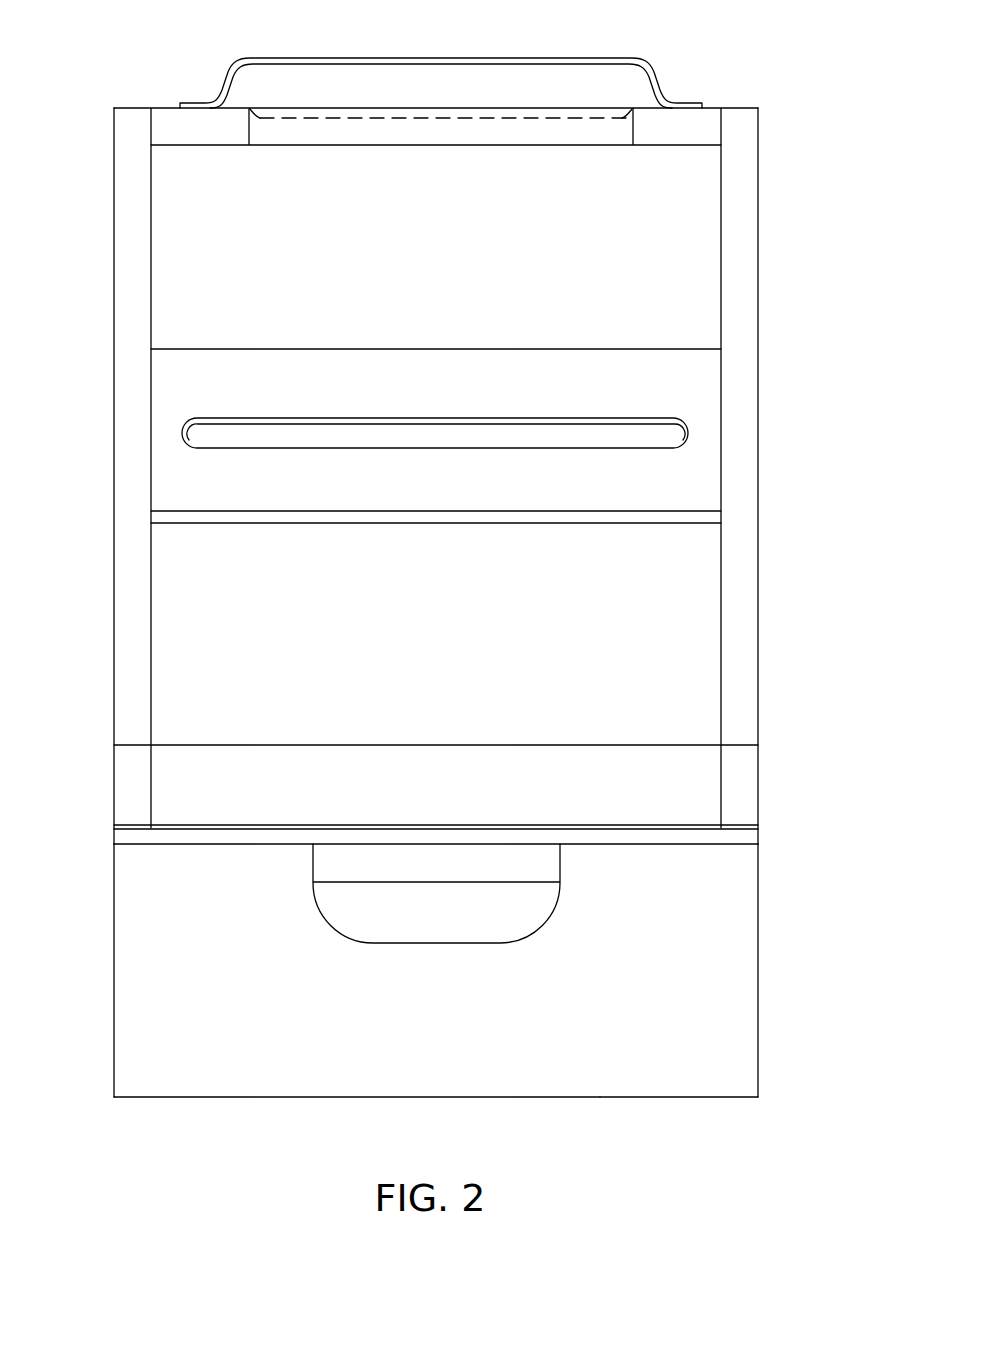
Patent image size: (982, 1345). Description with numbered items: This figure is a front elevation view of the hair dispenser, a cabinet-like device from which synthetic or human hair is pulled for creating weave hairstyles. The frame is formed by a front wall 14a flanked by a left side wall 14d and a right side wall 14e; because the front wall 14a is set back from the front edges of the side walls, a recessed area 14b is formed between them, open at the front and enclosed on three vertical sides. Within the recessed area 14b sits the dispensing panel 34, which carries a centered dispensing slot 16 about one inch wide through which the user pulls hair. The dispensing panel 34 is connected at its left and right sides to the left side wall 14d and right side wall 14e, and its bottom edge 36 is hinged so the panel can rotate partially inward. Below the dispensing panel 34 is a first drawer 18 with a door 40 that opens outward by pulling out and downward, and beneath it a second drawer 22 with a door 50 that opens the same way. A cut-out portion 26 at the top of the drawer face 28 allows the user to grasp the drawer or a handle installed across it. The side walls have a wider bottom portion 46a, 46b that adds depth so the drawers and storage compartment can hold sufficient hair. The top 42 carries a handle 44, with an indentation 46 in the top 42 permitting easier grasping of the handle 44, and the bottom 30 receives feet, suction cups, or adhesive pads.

The front wall 14a is at (172, 242).
The recessed area 14b is at (528, 232).
The left side wall 14d is at (112, 681).
The right side wall 14e is at (760, 645).
The dispensing slot 16 is at (673, 434).
The first drawer 18 is at (703, 768).
The second drawer 22 is at (112, 964).
The cut-out portion 26 is at (452, 930).
The drawer face 28 is at (697, 940).
The bottom 30 is at (245, 1100).
The dispensing panel 34 is at (162, 375).
The bottom edge 36 is at (406, 511).
The door 40 is at (178, 818).
The top 42 is at (146, 107).
The handle 44 is at (607, 58).
The indentation 46 is at (494, 117).
The wider bottom portion 46a is at (112, 792).
The wider bottom portion 46b is at (758, 828).
The door 50 is at (653, 1078).